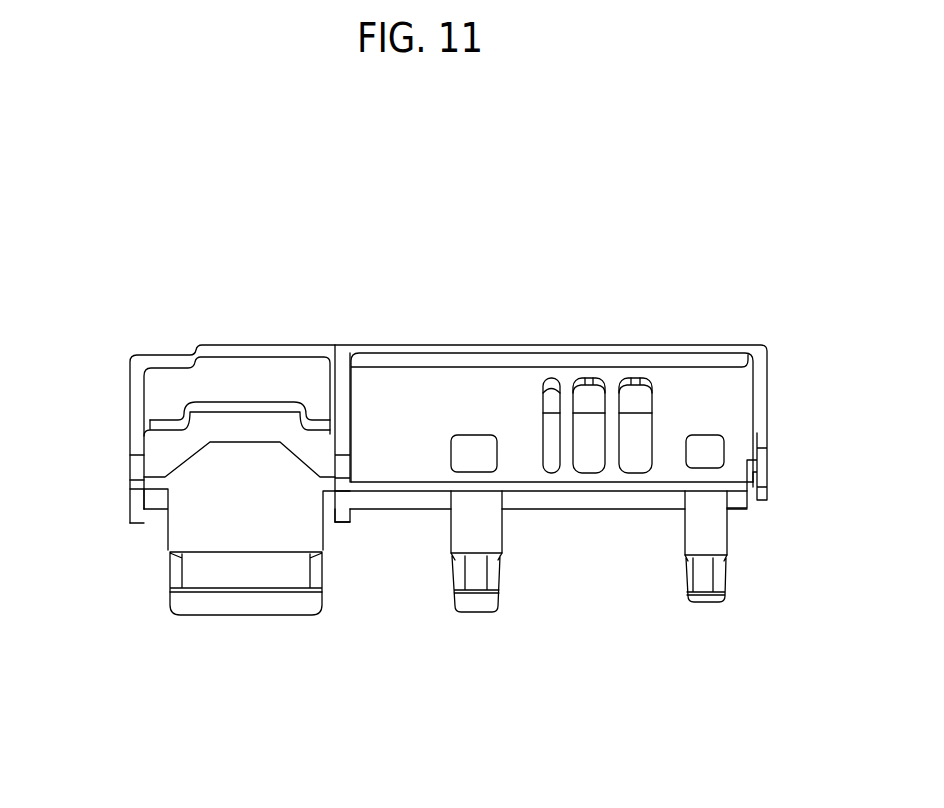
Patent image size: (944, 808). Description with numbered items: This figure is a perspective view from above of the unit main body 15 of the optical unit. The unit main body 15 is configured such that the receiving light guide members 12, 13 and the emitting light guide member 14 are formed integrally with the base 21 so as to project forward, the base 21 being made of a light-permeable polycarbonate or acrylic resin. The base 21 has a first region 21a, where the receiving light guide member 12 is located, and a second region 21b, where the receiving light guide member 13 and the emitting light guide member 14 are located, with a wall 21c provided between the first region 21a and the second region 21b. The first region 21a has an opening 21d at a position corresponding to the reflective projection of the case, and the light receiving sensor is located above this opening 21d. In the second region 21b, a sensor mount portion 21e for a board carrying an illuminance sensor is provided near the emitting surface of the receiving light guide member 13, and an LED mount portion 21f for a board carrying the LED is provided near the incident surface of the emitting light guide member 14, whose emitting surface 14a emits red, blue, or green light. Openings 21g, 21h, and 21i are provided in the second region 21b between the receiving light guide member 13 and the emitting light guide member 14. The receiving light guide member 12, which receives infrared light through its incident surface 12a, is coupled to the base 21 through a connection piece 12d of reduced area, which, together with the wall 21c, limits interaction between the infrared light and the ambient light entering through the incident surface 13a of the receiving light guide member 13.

The base 21 is at (345, 385).
The first region 21a is at (243, 385).
The second region 21b is at (427, 383).
The wall 21c is at (347, 467).
The opening 21d is at (157, 444).
The sensor mount portion 21e is at (477, 437).
The LED mount portion 21f is at (705, 449).
The opening 21g is at (550, 463).
The opening 21h is at (593, 428).
The opening 21i is at (632, 463).
The receiving light guide member 12 is at (178, 570).
The incident surface 12a is at (243, 598).
The connection piece 12d is at (157, 482).
The receiving light guide member 13 is at (477, 572).
The incident surface 13a is at (475, 603).
The emitting light guide member 14 is at (705, 580).
The emitting surface 14a is at (703, 597).
The unit main body 15 is at (208, 632).